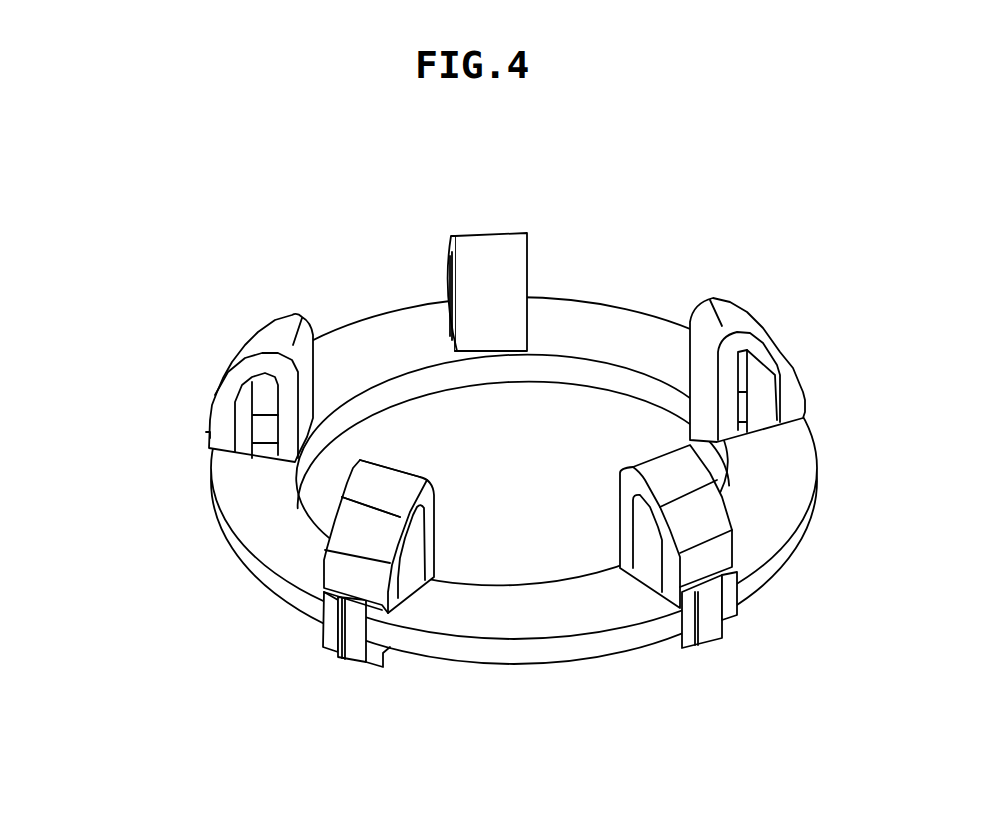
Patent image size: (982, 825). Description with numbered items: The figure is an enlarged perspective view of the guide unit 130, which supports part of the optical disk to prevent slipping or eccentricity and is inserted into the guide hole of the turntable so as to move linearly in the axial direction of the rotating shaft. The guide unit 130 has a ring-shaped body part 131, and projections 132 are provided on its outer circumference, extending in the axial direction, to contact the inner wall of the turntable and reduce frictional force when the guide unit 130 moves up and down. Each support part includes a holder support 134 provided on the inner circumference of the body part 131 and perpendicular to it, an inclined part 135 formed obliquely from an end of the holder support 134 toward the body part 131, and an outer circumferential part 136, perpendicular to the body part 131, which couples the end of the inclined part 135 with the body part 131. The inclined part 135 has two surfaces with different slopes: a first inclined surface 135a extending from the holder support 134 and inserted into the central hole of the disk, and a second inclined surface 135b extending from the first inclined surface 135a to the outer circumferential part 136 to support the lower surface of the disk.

The guide unit 130 is at (323, 171).
The body part 131 is at (521, 615).
The projections 132 is at (707, 623).
The holder support 134 is at (700, 365).
The inclined part 135 is at (98, 500).
The first inclined surface 135a is at (357, 483).
The second inclined surface 135b is at (343, 537).
The outer circumferential part 136 is at (787, 393).